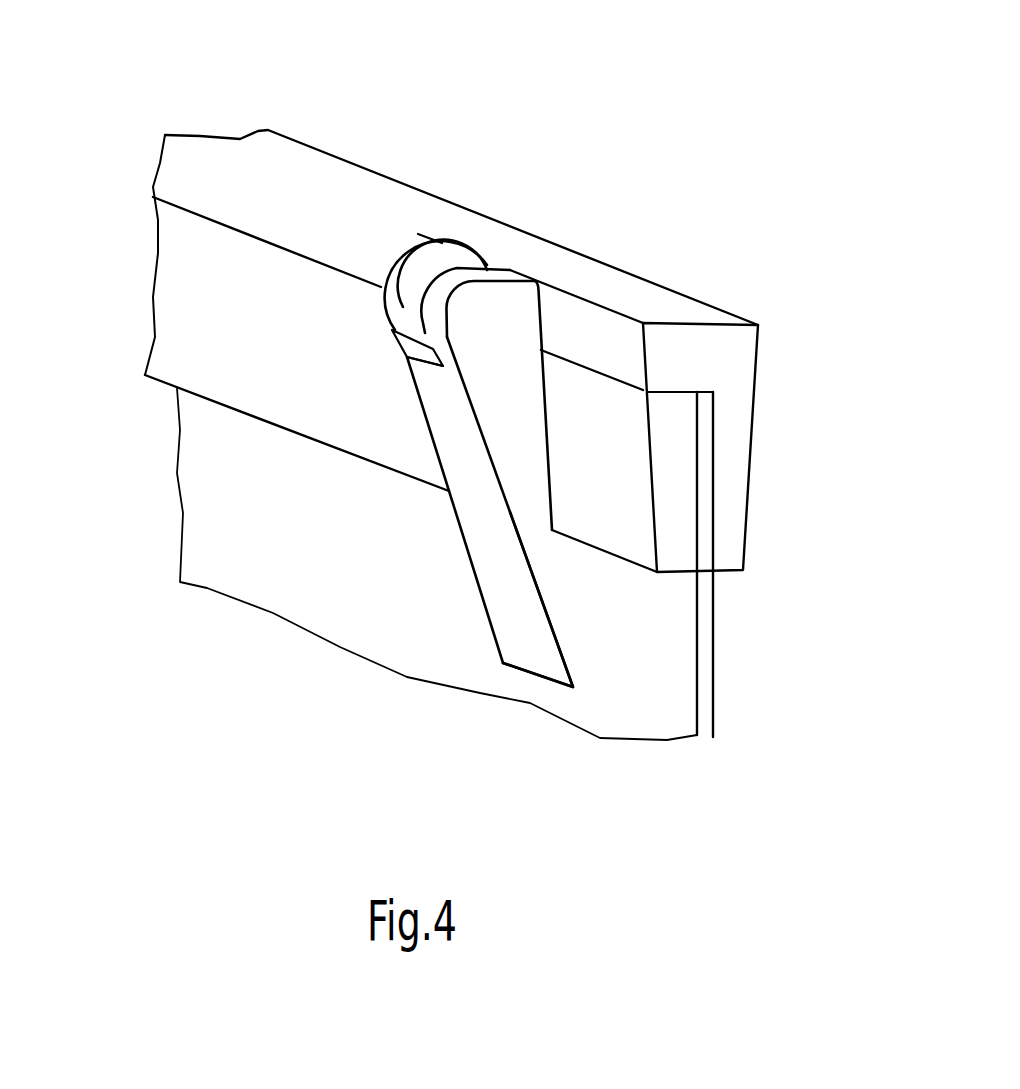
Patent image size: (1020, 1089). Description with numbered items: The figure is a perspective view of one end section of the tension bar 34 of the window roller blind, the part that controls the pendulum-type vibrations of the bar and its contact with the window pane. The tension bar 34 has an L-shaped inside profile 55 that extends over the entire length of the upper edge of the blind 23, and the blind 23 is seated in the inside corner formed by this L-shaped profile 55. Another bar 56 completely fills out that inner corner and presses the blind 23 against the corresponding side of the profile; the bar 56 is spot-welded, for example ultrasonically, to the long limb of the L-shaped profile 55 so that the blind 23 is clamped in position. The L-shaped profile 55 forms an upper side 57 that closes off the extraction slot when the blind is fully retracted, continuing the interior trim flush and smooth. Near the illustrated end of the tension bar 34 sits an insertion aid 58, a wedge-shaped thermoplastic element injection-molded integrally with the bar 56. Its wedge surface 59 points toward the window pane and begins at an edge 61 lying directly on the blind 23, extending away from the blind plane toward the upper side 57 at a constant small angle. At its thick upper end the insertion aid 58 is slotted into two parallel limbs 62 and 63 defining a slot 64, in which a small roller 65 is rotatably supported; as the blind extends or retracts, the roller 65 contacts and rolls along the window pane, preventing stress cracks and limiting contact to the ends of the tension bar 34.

The blind 23 is at (700, 677).
The tension bar 34 is at (770, 256).
The L-shaped inside profile 55 is at (728, 432).
The bar 56 is at (213, 337).
The upper side 57 is at (597, 280).
The insertion aid 58 is at (337, 682).
The wedge surface 59 is at (518, 627).
The edge 61 is at (552, 688).
The limb 62 is at (392, 343).
The limb 63 is at (457, 303).
The slot 64 is at (420, 362).
The roller 65 is at (430, 245).